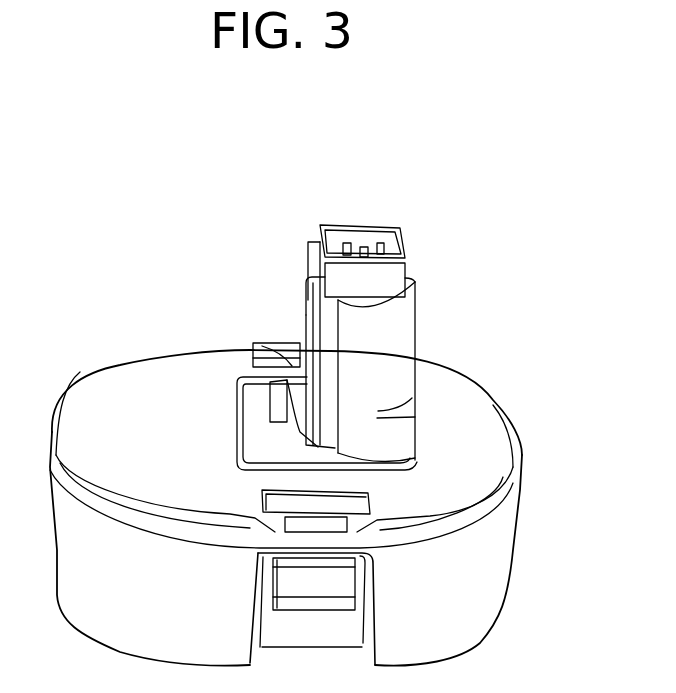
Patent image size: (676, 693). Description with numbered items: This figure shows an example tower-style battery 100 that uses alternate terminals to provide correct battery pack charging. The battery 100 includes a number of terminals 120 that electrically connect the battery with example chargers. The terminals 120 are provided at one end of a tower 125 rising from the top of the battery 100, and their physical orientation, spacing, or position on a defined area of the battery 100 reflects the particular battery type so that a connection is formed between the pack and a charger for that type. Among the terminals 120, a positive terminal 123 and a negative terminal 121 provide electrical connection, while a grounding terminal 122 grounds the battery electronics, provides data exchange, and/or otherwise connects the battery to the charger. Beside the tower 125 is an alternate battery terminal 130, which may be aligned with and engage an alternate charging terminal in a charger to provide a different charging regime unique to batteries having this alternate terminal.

The tower-style battery 100 is at (471, 322).
The terminals 120 is at (361, 208).
The negative terminal 121 is at (400, 217).
The grounding terminal 122 is at (364, 247).
The positive terminal 123 is at (343, 242).
The tower 125 is at (428, 255).
The alternate battery terminal 130 is at (258, 343).